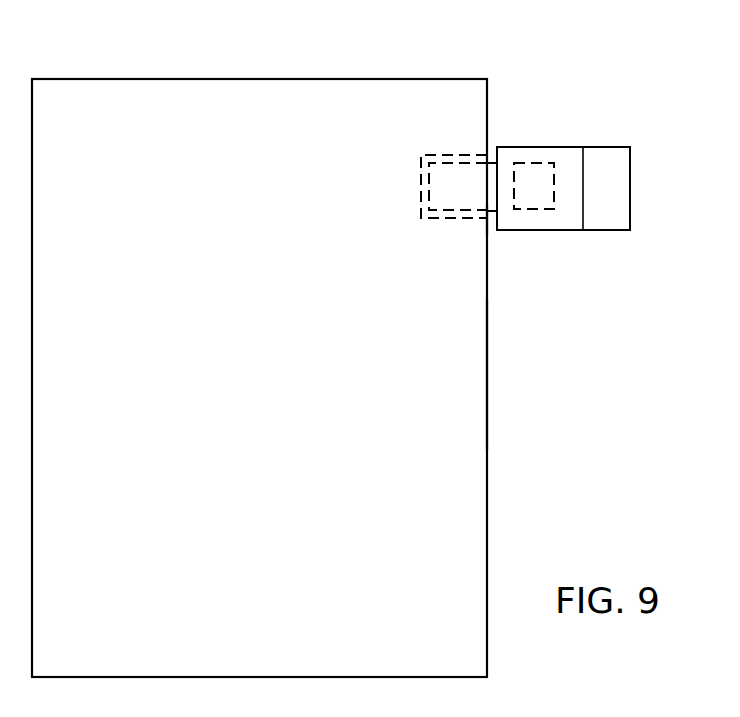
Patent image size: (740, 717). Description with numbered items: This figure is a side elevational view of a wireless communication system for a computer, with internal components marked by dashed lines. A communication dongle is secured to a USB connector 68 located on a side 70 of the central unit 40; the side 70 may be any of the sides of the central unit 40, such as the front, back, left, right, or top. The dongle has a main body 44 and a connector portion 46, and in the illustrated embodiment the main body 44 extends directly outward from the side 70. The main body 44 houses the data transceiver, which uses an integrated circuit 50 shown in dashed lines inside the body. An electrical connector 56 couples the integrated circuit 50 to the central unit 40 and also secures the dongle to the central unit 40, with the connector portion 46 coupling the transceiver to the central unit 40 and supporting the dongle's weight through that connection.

The central unit 40 is at (297, 52).
The main body 44 is at (572, 173).
The connector portion 46 is at (489, 212).
The integrated circuit 50 is at (533, 182).
The electrical connector 56 is at (458, 182).
The USB connector 68 is at (426, 155).
The side 70 is at (487, 374).